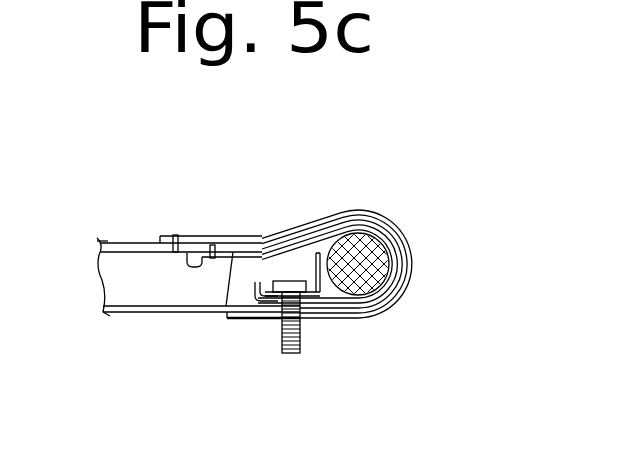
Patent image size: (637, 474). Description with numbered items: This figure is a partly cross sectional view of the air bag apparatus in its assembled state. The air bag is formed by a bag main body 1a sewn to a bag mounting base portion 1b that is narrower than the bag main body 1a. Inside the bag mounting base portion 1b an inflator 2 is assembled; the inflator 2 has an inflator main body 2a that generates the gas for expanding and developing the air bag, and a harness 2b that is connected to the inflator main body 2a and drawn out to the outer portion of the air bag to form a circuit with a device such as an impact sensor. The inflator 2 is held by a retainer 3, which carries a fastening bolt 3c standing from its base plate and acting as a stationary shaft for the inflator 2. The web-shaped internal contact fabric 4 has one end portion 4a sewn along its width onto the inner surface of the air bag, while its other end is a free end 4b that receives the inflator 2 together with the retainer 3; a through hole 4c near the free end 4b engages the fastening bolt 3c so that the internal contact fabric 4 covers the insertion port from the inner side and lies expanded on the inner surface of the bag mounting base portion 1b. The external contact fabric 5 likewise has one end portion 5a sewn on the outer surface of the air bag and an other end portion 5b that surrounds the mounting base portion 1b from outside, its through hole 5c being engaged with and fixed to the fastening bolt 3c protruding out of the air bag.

The bag main body 1a is at (120, 238).
The bag mounting base portion 1b is at (346, 222).
The inflator 2 is at (393, 240).
The inflator main body 2a is at (420, 250).
The harness 2b is at (333, 298).
The retainer 3 is at (318, 251).
The fastening bolt 3c is at (291, 356).
The internal contact fabric 4 is at (398, 305).
The one end portion 4a is at (187, 253).
The free end 4b is at (233, 252).
The through hole 4c is at (260, 318).
The external contact fabric 5 is at (262, 236).
The one end portion 5a is at (172, 236).
The other end portion 5b is at (228, 316).
The through hole 5c is at (286, 320).